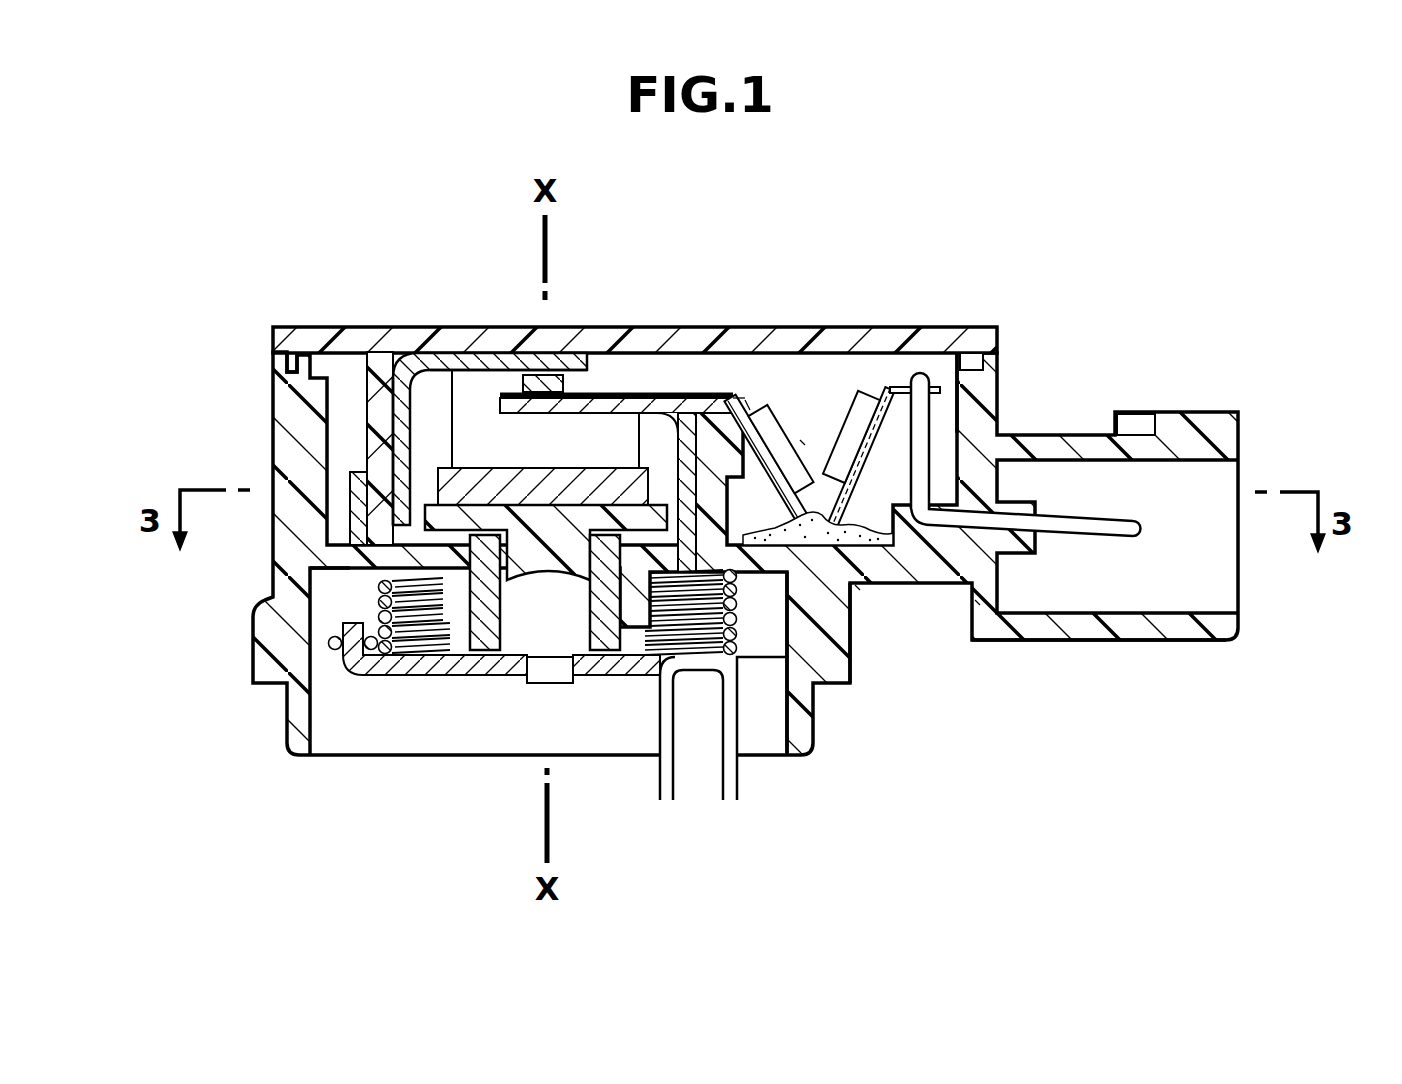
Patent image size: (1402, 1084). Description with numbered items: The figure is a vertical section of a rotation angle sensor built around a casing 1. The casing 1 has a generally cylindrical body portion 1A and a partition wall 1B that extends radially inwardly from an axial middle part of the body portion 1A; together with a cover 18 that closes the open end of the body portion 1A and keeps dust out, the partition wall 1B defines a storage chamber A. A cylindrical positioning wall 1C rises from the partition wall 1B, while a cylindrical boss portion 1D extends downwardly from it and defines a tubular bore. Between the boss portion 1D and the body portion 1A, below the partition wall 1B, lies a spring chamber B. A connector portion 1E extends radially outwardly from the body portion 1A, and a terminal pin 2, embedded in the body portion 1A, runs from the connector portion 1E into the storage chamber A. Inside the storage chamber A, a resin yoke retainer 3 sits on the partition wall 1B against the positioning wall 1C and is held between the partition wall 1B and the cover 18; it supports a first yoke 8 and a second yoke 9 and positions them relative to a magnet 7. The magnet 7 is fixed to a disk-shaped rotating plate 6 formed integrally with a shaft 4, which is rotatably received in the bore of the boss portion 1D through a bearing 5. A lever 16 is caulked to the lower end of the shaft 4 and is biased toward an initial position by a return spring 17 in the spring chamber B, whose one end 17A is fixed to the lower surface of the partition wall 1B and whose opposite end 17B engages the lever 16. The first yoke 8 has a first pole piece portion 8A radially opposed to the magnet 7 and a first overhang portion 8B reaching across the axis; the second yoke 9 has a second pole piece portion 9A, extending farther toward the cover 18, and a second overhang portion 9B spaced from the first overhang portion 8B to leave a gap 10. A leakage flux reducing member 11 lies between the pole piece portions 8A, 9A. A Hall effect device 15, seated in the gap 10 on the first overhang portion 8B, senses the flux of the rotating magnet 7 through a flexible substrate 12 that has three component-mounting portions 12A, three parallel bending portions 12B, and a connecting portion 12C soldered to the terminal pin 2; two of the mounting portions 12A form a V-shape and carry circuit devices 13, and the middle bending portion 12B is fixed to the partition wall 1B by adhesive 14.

The casing 1 is at (1018, 408).
The cylindrical body portion 1A is at (278, 365).
The partition wall 1B is at (340, 575).
The positioning wall 1C is at (352, 527).
The boss portion 1D is at (470, 660).
The connector portion 1E is at (1143, 632).
The terminal pin 2 is at (1090, 528).
The yoke retainer 3 is at (368, 422).
The shaft 4 is at (527, 637).
The bearing 5 is at (620, 640).
The rotating plate 6 is at (413, 673).
The magnet 7 is at (453, 413).
The first yoke 8 is at (670, 405).
The first pole piece portion 8A is at (762, 405).
The first overhang portion 8B is at (648, 392).
The second yoke 9 is at (400, 365).
The second pole piece portion 9A is at (397, 465).
The second overhang portion 9B is at (600, 368).
The gap 10 is at (495, 428).
The leakage flux reducing member 11 is at (467, 477).
The flexible substrate 12 is at (868, 435).
The component-mounting portion 12A is at (745, 400).
The bending portion 12B is at (740, 400).
The connecting portion 12C is at (962, 350).
The circuit device 13 is at (795, 445).
The adhesive 14 is at (905, 560).
The Hall effect device 15 is at (573, 367).
The lever 16 is at (697, 788).
The return spring 17 is at (370, 680).
The one end of return spring 17A is at (850, 667).
The opposite end of return spring 17B is at (335, 650).
The cover 18 is at (925, 385).
The storage chamber A is at (850, 440).
The spring chamber B is at (760, 712).